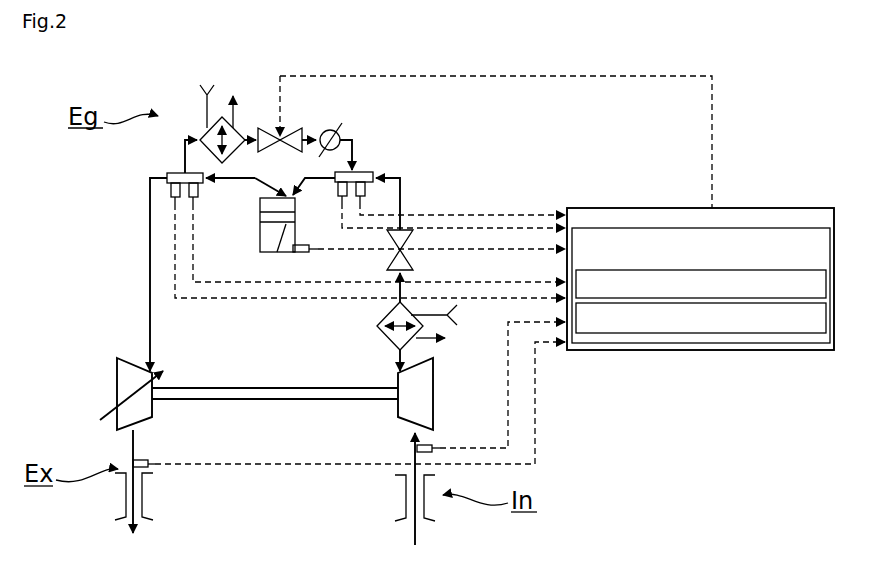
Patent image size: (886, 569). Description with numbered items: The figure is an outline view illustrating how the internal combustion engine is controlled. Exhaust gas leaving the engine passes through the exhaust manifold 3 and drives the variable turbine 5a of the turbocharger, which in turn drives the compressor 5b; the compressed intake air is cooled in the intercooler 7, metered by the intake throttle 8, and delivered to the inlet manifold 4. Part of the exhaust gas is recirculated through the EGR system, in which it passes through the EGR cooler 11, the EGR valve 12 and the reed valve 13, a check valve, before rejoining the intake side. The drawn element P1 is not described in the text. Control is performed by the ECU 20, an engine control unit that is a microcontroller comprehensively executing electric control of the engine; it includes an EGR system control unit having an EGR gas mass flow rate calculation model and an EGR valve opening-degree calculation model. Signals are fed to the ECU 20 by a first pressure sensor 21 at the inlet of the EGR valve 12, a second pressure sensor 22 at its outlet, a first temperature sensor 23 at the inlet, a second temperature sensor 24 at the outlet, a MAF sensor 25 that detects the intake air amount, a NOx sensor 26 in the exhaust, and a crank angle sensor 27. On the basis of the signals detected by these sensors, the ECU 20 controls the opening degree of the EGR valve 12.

The exhaust manifold 3 is at (178, 173).
The inlet manifold 4 is at (356, 177).
The variable turbine 5a is at (128, 372).
The compressor 5b is at (434, 386).
The intercooler 7 is at (383, 318).
The intake throttle 8 is at (404, 232).
The EGR cooler 11 is at (208, 135).
The EGR valve 12 is at (270, 131).
The reed valve 13 is at (324, 130).
The ECU 20 is at (776, 210).
The first pressure sensor 21 is at (169, 189).
The second pressure sensor 22 is at (378, 178).
The first temperature sensor 23 is at (199, 191).
The second temperature sensor 24 is at (352, 164).
The MAF sensor 25 is at (416, 448).
The NOx sensor 26 is at (148, 460).
The crank angle sensor 27 is at (300, 256).
The pneumatic actuator P1 is at (260, 228).